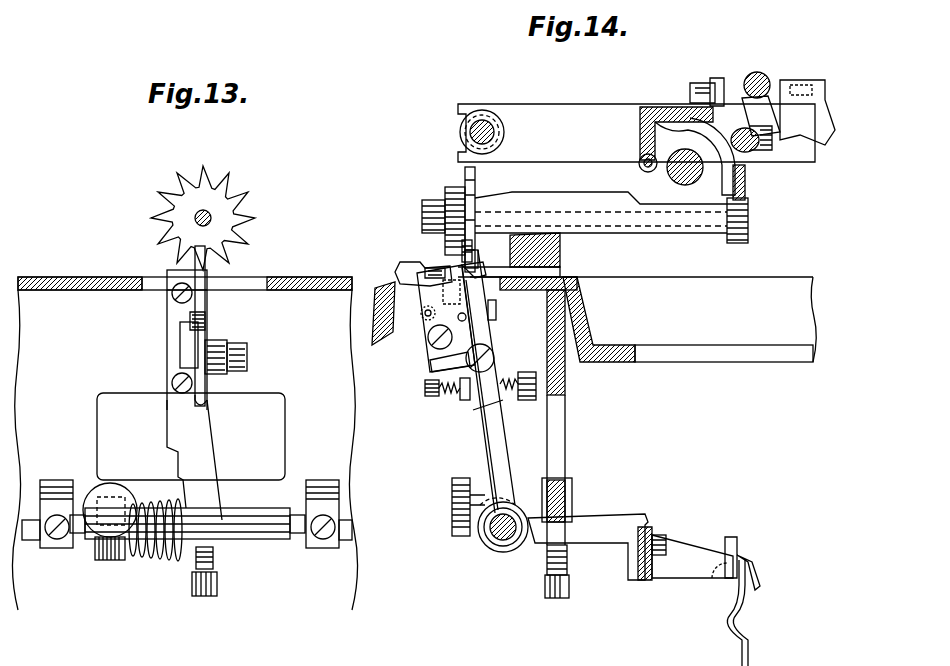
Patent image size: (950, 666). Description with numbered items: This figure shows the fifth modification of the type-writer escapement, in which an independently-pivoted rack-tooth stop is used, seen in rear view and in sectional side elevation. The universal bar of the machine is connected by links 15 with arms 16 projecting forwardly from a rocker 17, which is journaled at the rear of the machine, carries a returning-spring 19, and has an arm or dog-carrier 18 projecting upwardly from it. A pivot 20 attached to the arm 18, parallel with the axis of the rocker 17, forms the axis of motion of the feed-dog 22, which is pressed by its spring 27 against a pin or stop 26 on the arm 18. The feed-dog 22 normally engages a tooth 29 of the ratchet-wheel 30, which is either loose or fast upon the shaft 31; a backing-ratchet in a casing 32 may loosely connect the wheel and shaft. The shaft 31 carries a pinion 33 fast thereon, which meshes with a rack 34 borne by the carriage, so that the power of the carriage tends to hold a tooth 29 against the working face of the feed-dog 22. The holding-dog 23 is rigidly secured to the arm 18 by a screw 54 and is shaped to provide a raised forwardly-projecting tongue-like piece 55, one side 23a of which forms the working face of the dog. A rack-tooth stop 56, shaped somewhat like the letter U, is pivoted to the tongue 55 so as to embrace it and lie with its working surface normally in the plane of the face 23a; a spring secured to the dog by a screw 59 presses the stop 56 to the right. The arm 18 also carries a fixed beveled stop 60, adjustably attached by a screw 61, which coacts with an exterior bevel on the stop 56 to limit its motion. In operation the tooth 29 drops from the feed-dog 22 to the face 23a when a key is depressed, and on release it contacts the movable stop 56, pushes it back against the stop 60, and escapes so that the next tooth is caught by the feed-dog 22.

In FIG. 14, the links 15 is at (712, 602).
In FIG. 14, the arms 16 is at (612, 525).
In FIG. 13, the rocker 17 is at (263, 538).
In FIG. 14, the rocker 17 is at (480, 540).
In FIG. 13, the arm or dog-carrier 18 is at (194, 460).
In FIG. 14, the arm or dog-carrier 18 is at (482, 395).
In FIG. 13, the returning-spring 19 is at (168, 560).
In FIG. 14, the returning-spring 19 is at (493, 556).
In FIG. 14, the pivot 20 is at (492, 356).
In FIG. 14, the feed-dog 22 is at (488, 381).
In FIG. 14, the holding-dog 23 is at (430, 335).
In FIG. 14, the working face of the holding-dog 23a is at (408, 270).
In FIG. 14, the pin or stop 26 is at (466, 316).
In FIG. 14, the spring 27 is at (505, 392).
In FIG. 13, the tooth 29 is at (232, 248).
In FIG. 13, the ratchet-wheel 30 is at (203, 218).
In FIG. 14, the ratchet-wheel 30 is at (476, 188).
In FIG. 14, the shaft 31 is at (655, 230).
In FIG. 14, the casing 32 is at (446, 194).
In FIG. 14, the pinion 33 is at (748, 215).
In FIG. 14, the rack 34 is at (735, 176).
In FIG. 13, the screw 54 is at (212, 328).
In FIG. 14, the screw 54 is at (440, 352).
In FIG. 14, the tongue-like piece 55 is at (395, 296).
In FIG. 14, the rack-tooth stop 56 is at (458, 262).
In FIG. 14, the screw 59 is at (422, 316).
In FIG. 13, the fixed beveled stop 60 is at (187, 340).
In FIG. 13, the screw 61 is at (172, 296).